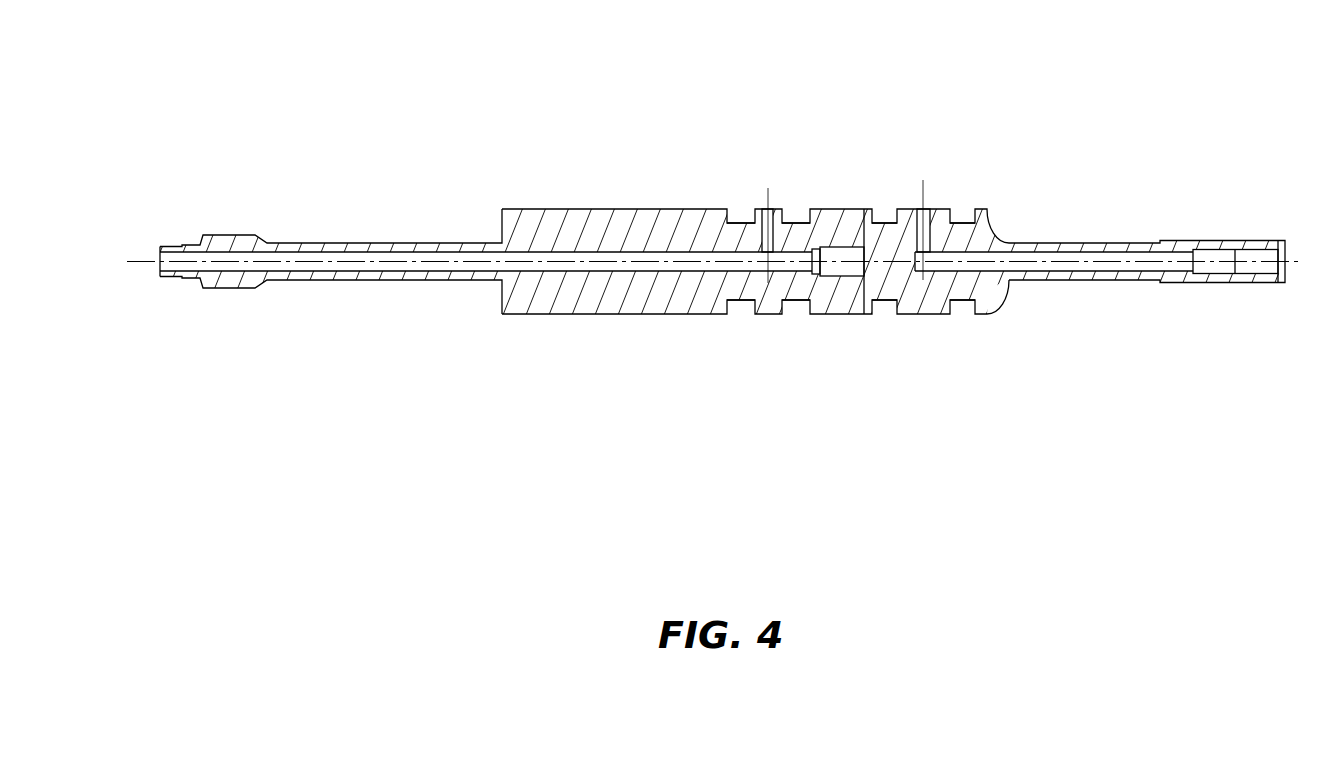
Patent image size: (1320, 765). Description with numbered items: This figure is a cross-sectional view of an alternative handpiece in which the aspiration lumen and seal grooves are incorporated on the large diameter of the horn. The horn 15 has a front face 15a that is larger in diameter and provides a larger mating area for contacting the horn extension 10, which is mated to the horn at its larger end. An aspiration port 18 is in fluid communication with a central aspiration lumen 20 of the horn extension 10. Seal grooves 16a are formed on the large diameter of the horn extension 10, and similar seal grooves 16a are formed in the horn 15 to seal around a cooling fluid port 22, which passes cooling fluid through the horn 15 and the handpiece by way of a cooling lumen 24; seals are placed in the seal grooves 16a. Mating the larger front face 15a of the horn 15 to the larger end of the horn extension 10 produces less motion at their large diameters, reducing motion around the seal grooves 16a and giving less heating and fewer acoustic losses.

The horn extension 10 is at (990, 292).
The horn 15 is at (627, 295).
The front face 15a is at (862, 222).
The seal grooves 16a is at (740, 213).
The aspiration port 18 is at (925, 215).
The central aspiration lumen 20 is at (1103, 258).
The cooling fluid port 22 is at (760, 214).
The cooling lumen 24 is at (580, 260).